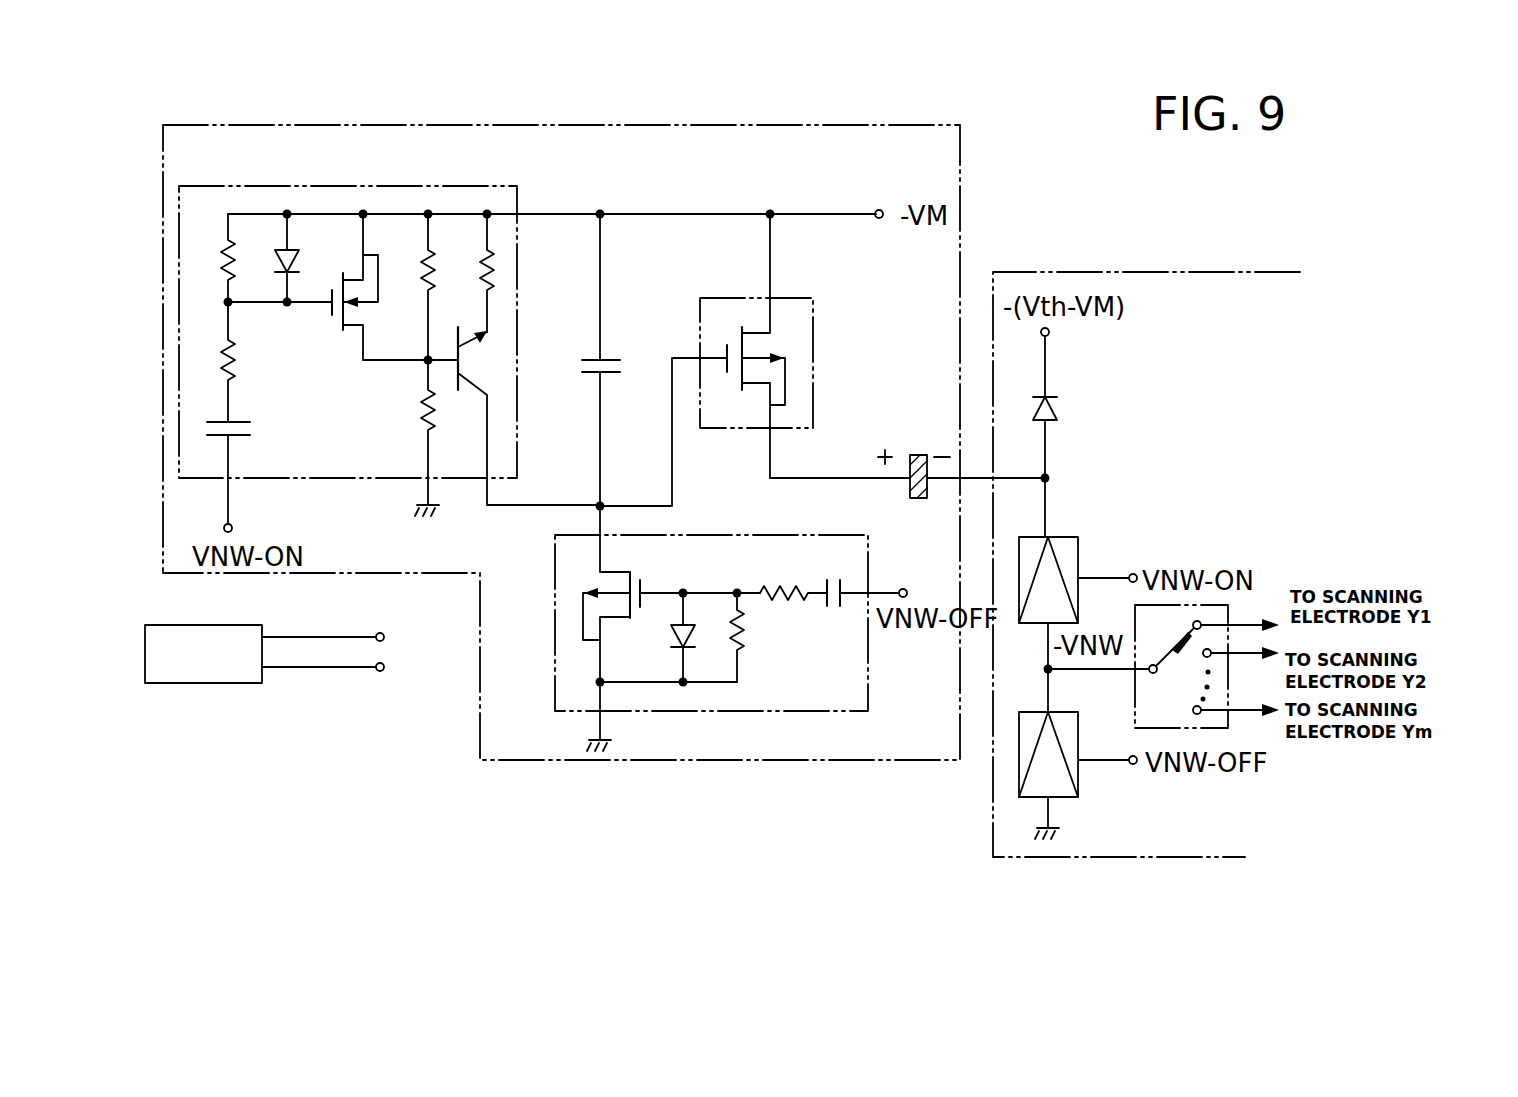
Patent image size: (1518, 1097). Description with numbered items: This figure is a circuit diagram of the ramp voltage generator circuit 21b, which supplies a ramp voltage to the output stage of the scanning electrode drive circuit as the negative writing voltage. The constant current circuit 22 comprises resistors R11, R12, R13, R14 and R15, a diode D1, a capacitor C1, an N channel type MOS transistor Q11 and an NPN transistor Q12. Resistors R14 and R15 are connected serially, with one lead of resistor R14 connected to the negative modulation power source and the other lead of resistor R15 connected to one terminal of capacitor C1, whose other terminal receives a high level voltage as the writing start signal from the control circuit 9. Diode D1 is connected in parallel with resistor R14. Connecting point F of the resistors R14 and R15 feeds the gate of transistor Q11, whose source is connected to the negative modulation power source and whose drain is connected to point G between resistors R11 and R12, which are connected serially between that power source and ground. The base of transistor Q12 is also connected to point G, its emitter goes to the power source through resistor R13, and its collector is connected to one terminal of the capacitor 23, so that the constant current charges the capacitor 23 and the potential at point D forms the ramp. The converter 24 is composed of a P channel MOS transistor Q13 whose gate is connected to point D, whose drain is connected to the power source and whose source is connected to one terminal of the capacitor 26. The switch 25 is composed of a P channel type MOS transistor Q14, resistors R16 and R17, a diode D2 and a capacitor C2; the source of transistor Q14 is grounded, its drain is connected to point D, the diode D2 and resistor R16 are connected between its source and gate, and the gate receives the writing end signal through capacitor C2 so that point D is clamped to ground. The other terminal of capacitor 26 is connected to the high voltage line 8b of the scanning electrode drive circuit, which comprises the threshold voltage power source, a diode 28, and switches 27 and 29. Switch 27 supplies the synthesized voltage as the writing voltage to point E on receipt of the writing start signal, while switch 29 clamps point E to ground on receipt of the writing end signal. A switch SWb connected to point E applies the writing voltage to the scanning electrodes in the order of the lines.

The ramp voltage generator circuit 21b is at (970, 163).
The constant current circuit 22 is at (349, 186).
The capacitor 23 is at (590, 372).
The converter 24 is at (807, 338).
The switch 25 is at (582, 563).
The capacitor 26 is at (910, 458).
The switch 27 is at (1055, 535).
The diode 28 is at (1060, 420).
The switch 29 is at (1080, 797).
The high voltage line 8b is at (1000, 800).
The control circuit 9 is at (236, 685).
The resistor R14 is at (226, 240).
The diode D1 is at (296, 264).
The N channel type MOS transistor Q11 is at (352, 334).
The resistor R11 is at (427, 258).
The resistor R13 is at (488, 268).
The NPN transistor Q12 is at (488, 378).
The resistor R12 is at (427, 418).
The resistor R15 is at (236, 340).
The capacitor C1 is at (240, 438).
The P channel MOS transistor Q13 is at (758, 328).
The P channel type MOS transistor Q14 is at (613, 571).
The resistor R17 is at (793, 565).
The capacitor C2 is at (823, 603).
The diode D2 is at (677, 643).
The resistor R16 is at (740, 653).
The switch SWb is at (1167, 707).